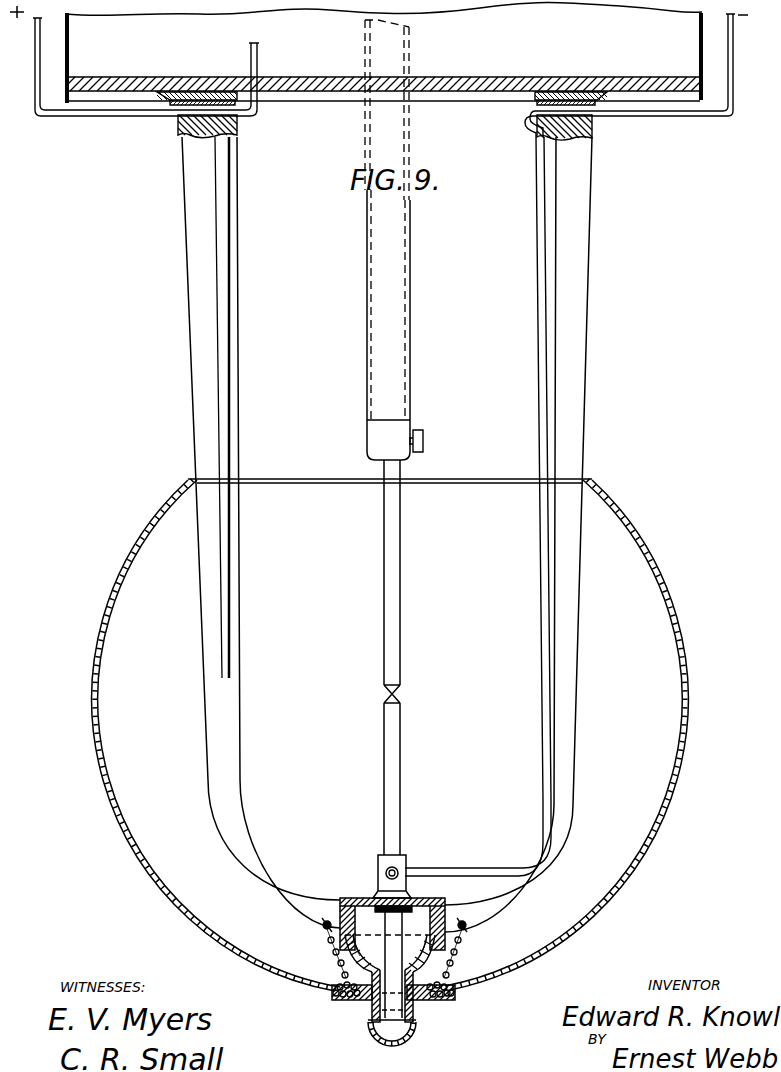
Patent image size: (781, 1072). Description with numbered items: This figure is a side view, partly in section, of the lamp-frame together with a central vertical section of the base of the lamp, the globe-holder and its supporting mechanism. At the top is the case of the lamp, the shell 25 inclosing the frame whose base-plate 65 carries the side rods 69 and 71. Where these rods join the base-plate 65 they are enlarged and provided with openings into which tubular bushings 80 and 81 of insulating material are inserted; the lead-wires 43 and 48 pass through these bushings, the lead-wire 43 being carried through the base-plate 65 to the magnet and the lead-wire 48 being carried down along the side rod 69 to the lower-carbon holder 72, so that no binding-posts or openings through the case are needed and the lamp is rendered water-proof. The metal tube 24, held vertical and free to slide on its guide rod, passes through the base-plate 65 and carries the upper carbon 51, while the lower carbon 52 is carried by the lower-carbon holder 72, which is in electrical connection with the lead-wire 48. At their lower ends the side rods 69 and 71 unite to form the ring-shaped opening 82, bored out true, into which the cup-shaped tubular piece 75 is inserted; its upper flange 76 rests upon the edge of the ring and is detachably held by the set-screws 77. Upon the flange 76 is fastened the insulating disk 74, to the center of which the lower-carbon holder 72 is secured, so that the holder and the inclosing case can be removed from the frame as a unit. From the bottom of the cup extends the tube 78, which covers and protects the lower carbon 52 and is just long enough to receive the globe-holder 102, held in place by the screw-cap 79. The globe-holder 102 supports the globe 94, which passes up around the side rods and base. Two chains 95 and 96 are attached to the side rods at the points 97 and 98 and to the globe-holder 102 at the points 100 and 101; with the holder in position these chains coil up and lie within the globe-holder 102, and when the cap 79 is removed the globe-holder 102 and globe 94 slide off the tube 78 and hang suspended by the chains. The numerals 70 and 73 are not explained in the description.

The shell 25 is at (68, 51).
The base-plate 65 is at (438, 78).
The lead-wire 43 is at (103, 116).
The lead-wire 48 is at (689, 114).
The tubular bushing 81 is at (178, 118).
The tubular bushing 80 is at (594, 114).
The side rod 71 is at (186, 206).
The side rod 69 is at (591, 216).
The metal tube 24 is at (410, 300).
The binding post 70 is at (418, 426).
The upper carbon 51 is at (404, 572).
The lower carbon 52 is at (404, 770).
The globe 94 is at (680, 758).
The lower-carbon holder 72 is at (406, 863).
The pivot pin 73 is at (386, 876).
The disk 74 is at (436, 897).
The side flange 76 is at (341, 906).
The attachment point 98 is at (322, 923).
The attachment point 97 is at (467, 924).
The set-screws 77 is at (464, 932).
The ring-shaped opening 82 is at (458, 948).
The tubular piece 75 is at (390, 953).
The chain 95 is at (437, 948).
The chain 96 is at (349, 949).
The tube 78 is at (413, 1030).
The attachment point 101 is at (410, 1000).
The attachment point 100 is at (360, 1002).
The globe-holder 102 is at (456, 1002).
The cap 79 is at (406, 1045).